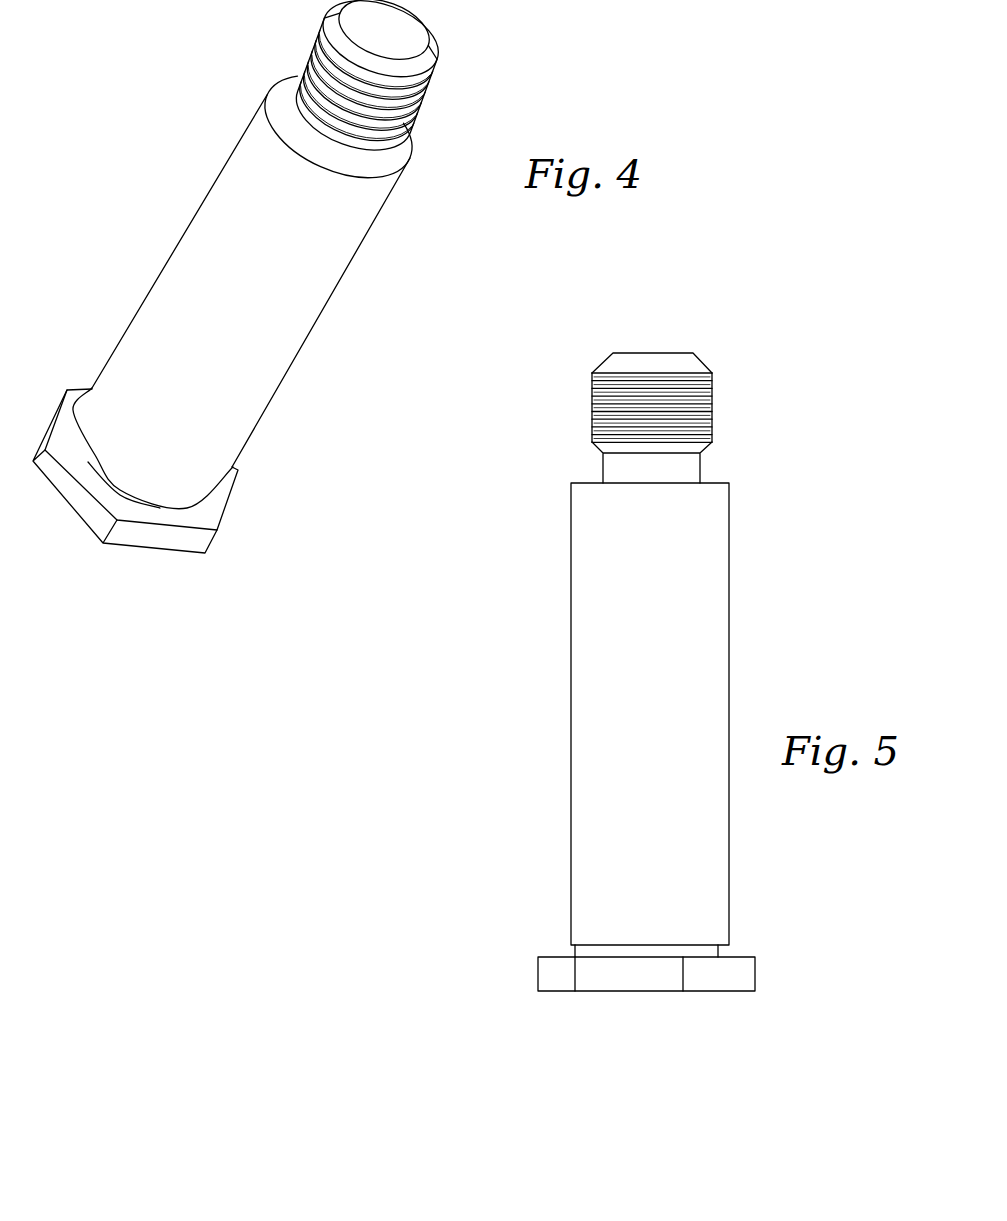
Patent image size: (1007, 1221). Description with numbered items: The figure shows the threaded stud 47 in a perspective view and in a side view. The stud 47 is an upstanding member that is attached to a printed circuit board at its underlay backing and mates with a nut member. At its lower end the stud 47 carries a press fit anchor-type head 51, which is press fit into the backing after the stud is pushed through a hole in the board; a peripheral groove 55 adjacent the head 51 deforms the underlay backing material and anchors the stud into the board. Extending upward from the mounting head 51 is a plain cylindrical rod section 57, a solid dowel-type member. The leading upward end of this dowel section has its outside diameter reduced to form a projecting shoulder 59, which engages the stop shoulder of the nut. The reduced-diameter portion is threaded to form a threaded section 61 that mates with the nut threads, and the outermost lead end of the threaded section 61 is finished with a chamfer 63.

In FIG. 4, the threaded stud 47 is at (315, 436).
In FIG. 5, the threaded stud 47 is at (500, 780).
In FIG. 4, the press fit anchor-type head 51 is at (400, 150).
In FIG. 5, the press fit anchor-type head 51 is at (652, 975).
In FIG. 5, the peripheral groove 55 is at (720, 950).
In FIG. 5, the plain cylindrical rod section 57 is at (698, 668).
In FIG. 5, the projecting shoulder 59 is at (717, 475).
In FIG. 5, the threaded section 61 is at (715, 397).
In FIG. 5, the chamfer 63 is at (682, 360).